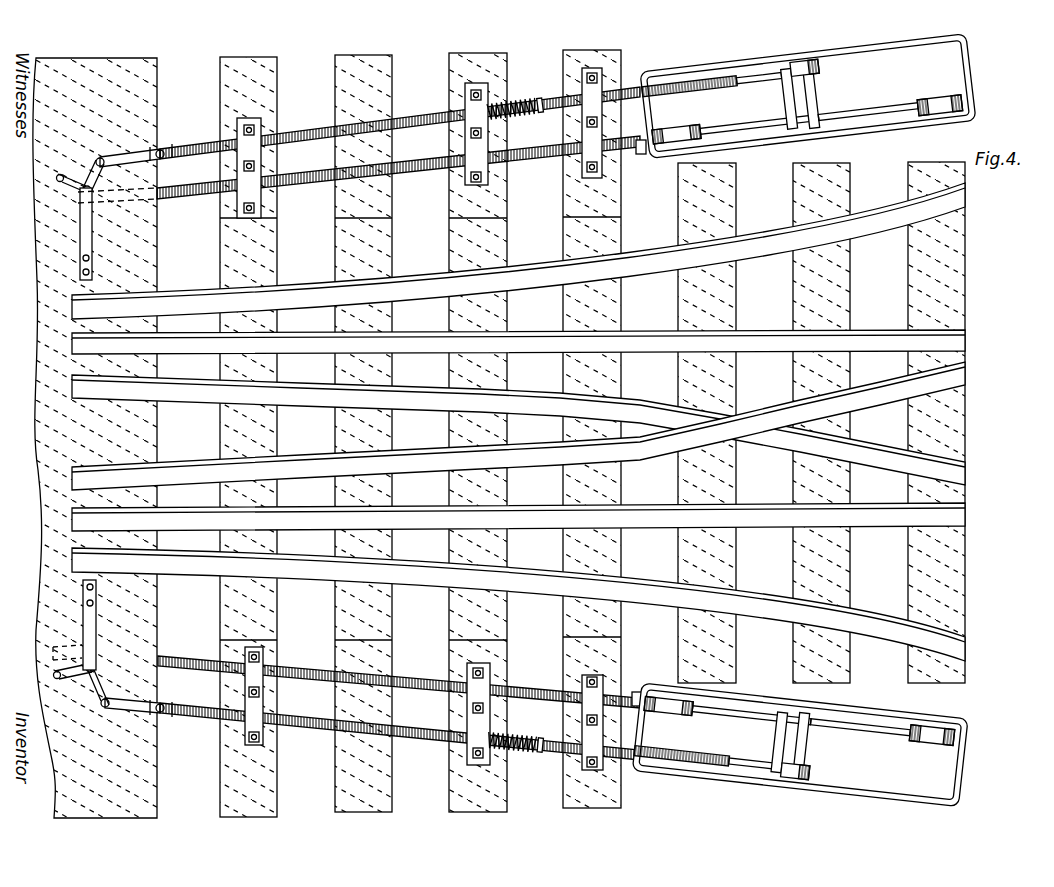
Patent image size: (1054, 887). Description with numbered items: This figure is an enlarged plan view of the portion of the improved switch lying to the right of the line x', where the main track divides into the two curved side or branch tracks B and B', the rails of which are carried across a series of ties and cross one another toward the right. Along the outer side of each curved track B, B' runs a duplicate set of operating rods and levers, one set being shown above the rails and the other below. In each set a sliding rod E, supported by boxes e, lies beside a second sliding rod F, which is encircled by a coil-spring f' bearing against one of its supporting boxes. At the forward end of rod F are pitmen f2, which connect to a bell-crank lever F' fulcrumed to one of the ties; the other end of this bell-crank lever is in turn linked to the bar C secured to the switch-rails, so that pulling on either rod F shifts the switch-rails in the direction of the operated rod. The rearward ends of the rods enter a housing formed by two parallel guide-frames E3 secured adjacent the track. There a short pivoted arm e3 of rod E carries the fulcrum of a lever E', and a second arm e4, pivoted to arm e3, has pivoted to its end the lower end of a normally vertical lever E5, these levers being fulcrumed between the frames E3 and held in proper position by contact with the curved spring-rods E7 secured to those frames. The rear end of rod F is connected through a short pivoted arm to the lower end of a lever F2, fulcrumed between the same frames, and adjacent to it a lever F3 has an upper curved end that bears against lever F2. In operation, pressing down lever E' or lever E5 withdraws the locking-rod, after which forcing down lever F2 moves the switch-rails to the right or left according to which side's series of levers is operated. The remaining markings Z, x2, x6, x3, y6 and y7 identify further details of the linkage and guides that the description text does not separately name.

The curved side or branch track B is at (532, 251).
The curved side or branch track B' is at (534, 604).
The bar C is at (533, 426).
The sliding rod F is at (368, 429).
The pitman f2 is at (160, 150).
The bell-crank lever F' is at (61, 432).
The slide bar Z is at (84, 192).
The sliding rod E is at (359, 422).
The box e is at (602, 172).
The short pivoted arm e3 is at (634, 700).
The second arm e4 is at (850, 112).
The lever E' is at (672, 423).
The guide-frame E3 is at (796, 66).
The second normally-vertical lever E5 is at (940, 100).
The curved spring-rod E7 is at (700, 70).
The lever F2 is at (820, 74).
The lever F3 is at (730, 762).
The coil-spring f' is at (515, 425).
The line x' x' is at (555, 418).
The cross-head x2 is at (778, 98).
The cross bar x6 is at (816, 94).
The slide bar x3 is at (163, 683).
The cross bar y6 is at (808, 742).
The cross-head y7 is at (778, 742).